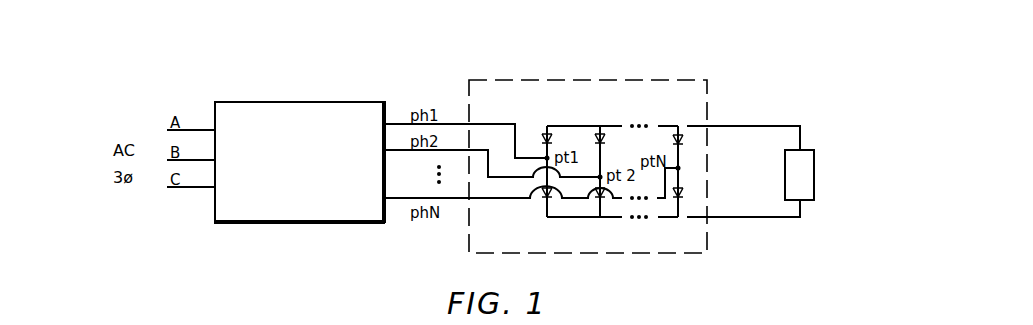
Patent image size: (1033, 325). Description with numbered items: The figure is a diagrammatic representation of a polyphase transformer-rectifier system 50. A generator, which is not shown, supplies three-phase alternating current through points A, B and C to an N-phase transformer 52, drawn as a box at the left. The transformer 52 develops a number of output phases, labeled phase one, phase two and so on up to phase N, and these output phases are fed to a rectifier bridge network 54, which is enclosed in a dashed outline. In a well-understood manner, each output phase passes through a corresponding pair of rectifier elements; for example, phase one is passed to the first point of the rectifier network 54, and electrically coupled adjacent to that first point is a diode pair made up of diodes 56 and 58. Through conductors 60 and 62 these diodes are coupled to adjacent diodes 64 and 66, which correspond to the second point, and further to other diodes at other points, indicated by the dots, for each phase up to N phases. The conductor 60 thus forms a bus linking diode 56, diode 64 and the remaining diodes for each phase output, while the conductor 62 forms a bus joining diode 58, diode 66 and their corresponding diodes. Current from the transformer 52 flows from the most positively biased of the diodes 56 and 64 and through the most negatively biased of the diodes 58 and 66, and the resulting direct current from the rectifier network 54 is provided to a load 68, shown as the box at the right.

The polyphase transformer-rectifier system 50 is at (553, 60).
The N-phase transformer 52 is at (310, 100).
The rectifier bridge network 54 is at (640, 80).
The diode 56 is at (545, 137).
The diode 58 is at (541, 196).
The conductor 60 is at (597, 127).
The conductor 62 is at (592, 217).
The diode 64 is at (603, 136).
The diode 66 is at (602, 195).
The load 68 is at (814, 163).